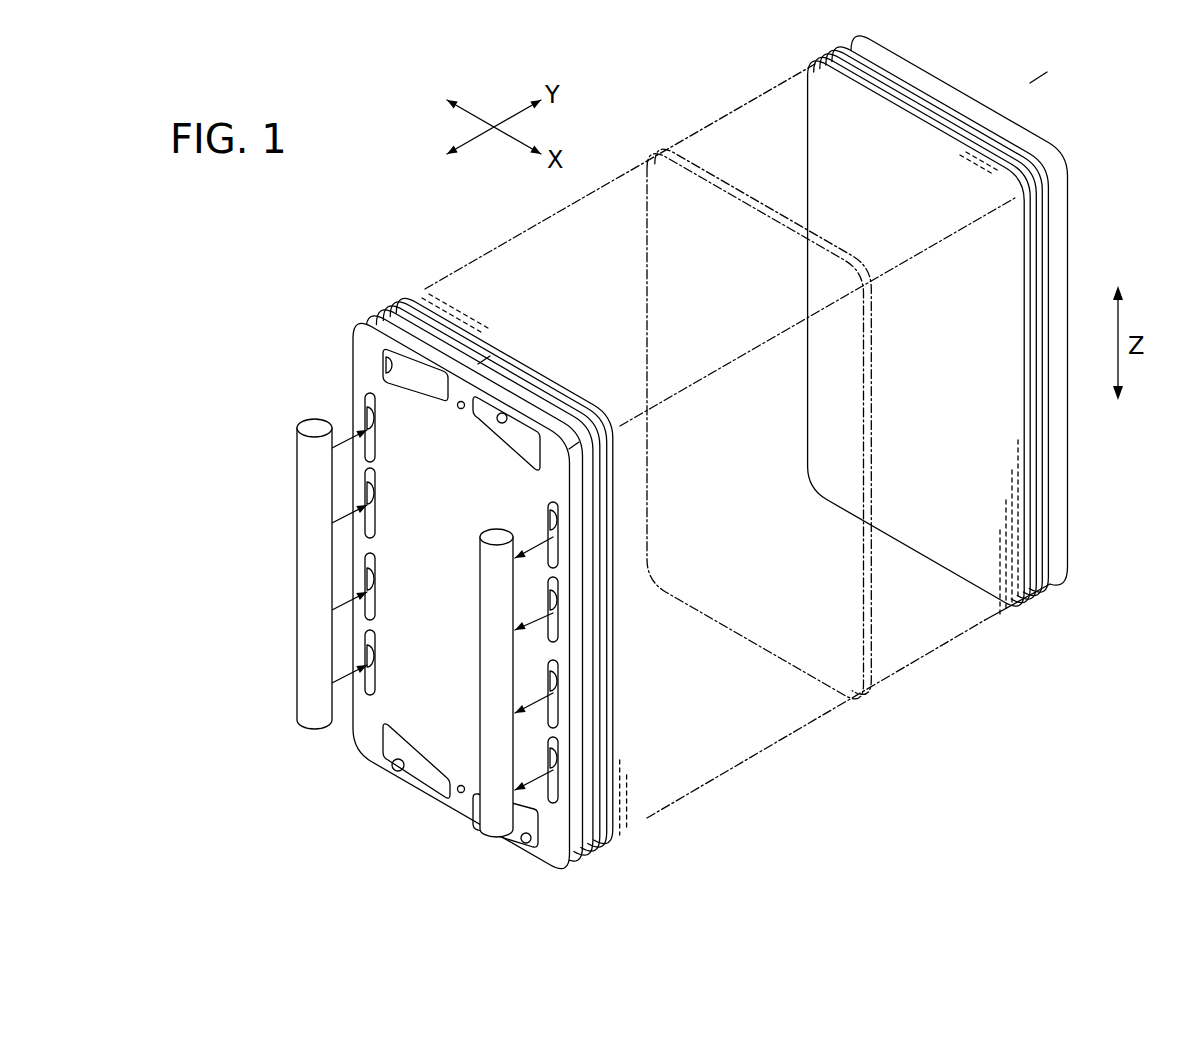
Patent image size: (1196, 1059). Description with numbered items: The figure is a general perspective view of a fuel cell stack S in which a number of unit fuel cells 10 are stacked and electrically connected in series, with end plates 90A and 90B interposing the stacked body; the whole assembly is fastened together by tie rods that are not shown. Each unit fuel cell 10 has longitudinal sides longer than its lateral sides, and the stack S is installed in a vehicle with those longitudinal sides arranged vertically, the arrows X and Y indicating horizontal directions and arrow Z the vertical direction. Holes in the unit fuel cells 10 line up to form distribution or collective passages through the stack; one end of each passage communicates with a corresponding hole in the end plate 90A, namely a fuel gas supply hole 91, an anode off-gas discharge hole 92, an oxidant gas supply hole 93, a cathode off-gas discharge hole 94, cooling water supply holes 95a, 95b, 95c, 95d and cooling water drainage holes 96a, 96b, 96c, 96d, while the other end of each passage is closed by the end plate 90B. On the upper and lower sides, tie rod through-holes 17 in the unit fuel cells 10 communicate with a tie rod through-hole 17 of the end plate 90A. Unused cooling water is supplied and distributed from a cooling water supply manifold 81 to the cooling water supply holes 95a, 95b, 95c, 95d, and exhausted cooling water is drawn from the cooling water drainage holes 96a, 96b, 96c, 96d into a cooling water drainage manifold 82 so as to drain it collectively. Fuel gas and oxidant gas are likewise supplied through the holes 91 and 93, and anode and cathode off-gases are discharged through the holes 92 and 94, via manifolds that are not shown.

The unit fuel cell 10 is at (417, 305).
The tie rod through-hole 17 is at (466, 401).
The cooling water supply manifold 81 is at (306, 547).
The cooling water drainage manifold 82 is at (493, 825).
The end plate 90A is at (378, 314).
The end plate 90B is at (978, 92).
The fuel gas supply hole 91 is at (383, 357).
The anode off-gas discharge hole 92 is at (531, 845).
The oxidant gas supply hole 93 is at (506, 416).
The cathode off-gas discharge hole 94 is at (397, 763).
The cooling water supply hole 95a is at (376, 423).
The cooling water supply hole 95b is at (376, 498).
The cooling water supply hole 95c is at (376, 583).
The cooling water supply hole 95d is at (376, 660).
The cooling water drainage hole 96a is at (549, 512).
The cooling water drainage hole 96b is at (558, 602).
The cooling water drainage hole 96c is at (558, 682).
The cooling water drainage hole 96d is at (558, 760).
The fuel cell stack S is at (1106, 130).